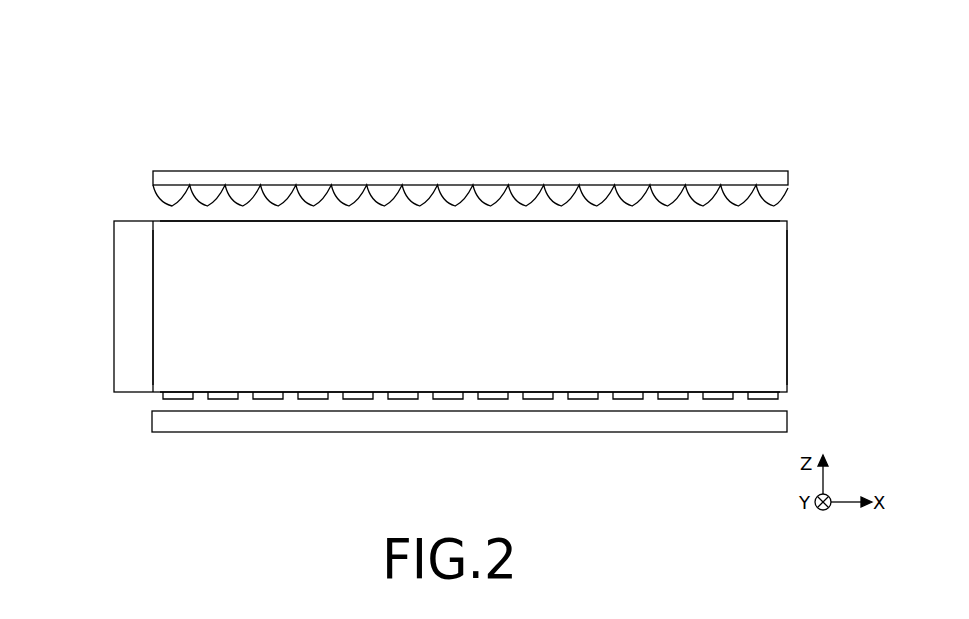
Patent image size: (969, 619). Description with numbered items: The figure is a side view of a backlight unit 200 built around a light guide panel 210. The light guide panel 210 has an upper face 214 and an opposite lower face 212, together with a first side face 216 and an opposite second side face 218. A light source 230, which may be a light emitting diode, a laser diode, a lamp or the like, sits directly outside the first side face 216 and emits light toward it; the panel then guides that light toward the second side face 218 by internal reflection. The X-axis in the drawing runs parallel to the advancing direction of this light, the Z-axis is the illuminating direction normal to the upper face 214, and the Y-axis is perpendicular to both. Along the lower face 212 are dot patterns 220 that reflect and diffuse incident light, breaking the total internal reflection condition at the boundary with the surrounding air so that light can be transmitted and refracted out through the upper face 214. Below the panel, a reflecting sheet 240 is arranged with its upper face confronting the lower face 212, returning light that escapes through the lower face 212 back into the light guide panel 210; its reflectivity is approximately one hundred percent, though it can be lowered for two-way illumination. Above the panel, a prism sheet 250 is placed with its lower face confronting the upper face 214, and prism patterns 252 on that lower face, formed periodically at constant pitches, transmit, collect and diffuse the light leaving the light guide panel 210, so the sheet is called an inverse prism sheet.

The backlight unit 200 is at (457, 54).
The light guide panel 210 is at (789, 281).
The lower face 212 is at (770, 396).
The upper face 214 is at (727, 221).
The first side face 216 is at (153, 328).
The second side face 218 is at (787, 309).
The dot patterns 220 is at (770, 375).
The light source 230 is at (123, 269).
The reflecting sheet 240 is at (158, 417).
The prism sheet 250 is at (793, 174).
The prism patterns 252 is at (790, 193).